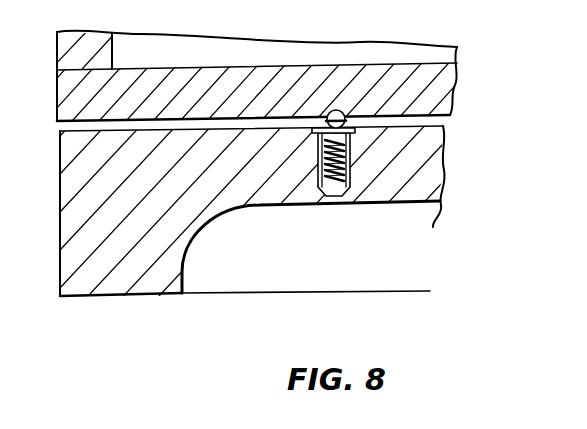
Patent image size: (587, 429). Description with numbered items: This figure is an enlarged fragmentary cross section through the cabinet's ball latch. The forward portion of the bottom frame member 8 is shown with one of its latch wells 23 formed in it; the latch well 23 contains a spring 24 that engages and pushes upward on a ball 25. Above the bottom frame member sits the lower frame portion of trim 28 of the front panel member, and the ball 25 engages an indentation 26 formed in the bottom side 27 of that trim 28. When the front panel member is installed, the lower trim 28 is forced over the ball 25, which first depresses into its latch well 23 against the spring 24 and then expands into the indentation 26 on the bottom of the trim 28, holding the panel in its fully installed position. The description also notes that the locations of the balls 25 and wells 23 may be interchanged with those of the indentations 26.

The trim 28 is at (458, 90).
The bottom frame member 8 is at (407, 171).
The bottom side 27 is at (423, 128).
The indentation 26 is at (329, 112).
The ball 25 is at (343, 114).
The spring 24 is at (318, 168).
The latch well 23 is at (351, 146).